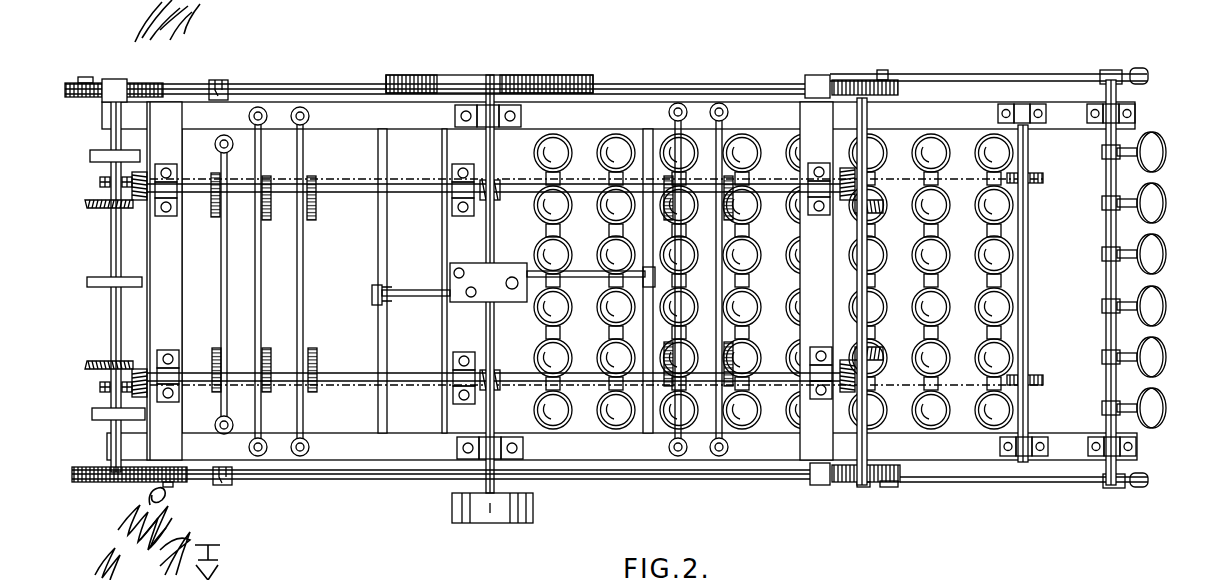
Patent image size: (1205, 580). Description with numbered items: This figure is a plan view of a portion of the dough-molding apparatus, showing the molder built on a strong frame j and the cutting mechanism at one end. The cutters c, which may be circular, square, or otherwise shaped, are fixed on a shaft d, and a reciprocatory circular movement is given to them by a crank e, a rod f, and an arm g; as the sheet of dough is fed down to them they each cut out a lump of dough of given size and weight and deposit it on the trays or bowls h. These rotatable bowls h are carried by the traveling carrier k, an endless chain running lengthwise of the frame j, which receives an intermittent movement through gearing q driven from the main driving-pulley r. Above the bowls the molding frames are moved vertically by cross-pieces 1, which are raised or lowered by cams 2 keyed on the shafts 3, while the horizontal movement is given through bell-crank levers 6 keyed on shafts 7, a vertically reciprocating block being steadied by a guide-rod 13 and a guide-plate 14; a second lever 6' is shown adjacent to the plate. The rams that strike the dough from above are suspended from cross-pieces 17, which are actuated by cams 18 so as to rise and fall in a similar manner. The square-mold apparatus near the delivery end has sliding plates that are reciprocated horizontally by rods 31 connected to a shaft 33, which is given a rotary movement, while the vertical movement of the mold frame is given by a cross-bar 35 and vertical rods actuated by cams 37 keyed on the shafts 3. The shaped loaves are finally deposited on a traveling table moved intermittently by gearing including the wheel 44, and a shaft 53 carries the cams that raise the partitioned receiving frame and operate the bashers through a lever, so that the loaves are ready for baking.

The cross-pieces 1 is at (309, 447).
The cams 2 is at (658, 137).
The shafts 3 is at (360, 372).
The bell-crank levers 6 is at (411, 289).
The bar 6' is at (591, 284).
The shafts 7 is at (388, 338).
The guide-rod 13 is at (513, 290).
The guide-plate 14 is at (507, 268).
The cross-pieces 17 is at (254, 447).
The cams 18 is at (272, 358).
The rods 31 is at (225, 482).
The shaft 33 is at (287, 88).
The cross-bar 35 is at (223, 295).
The cams 37 is at (213, 391).
The gearing 44 is at (93, 80).
The shaft 53 is at (115, 297).
The cutters c is at (1163, 201).
The shaft d is at (1106, 384).
The crank e is at (878, 72).
The rod f is at (1012, 73).
The arm g is at (1127, 72).
The trays or bowls h is at (773, 281).
The frame j is at (490, 281).
The traveling carrier k is at (357, 177).
The gearing q is at (482, 316).
The main driving-pulley r is at (534, 509).